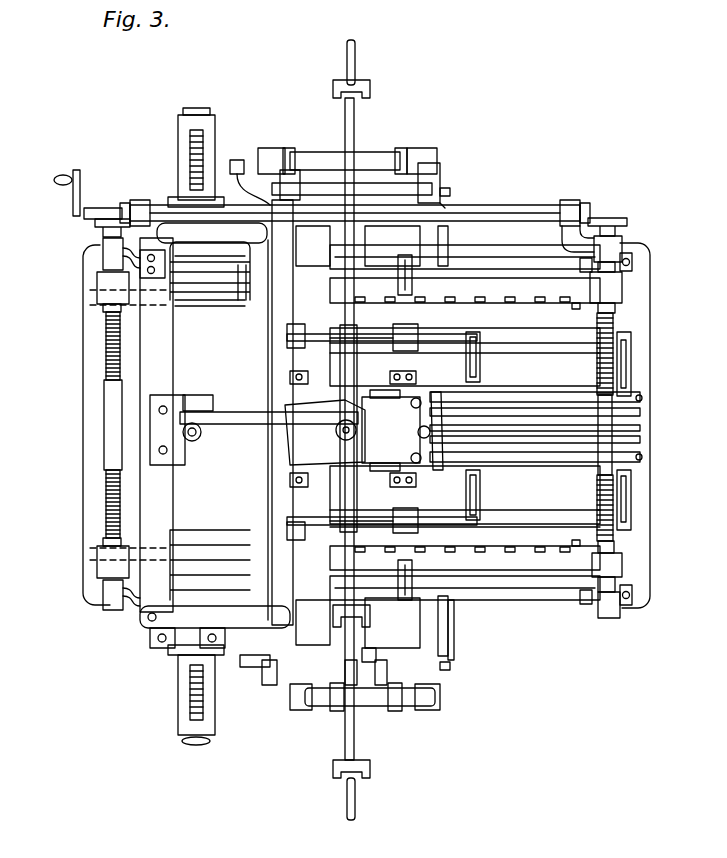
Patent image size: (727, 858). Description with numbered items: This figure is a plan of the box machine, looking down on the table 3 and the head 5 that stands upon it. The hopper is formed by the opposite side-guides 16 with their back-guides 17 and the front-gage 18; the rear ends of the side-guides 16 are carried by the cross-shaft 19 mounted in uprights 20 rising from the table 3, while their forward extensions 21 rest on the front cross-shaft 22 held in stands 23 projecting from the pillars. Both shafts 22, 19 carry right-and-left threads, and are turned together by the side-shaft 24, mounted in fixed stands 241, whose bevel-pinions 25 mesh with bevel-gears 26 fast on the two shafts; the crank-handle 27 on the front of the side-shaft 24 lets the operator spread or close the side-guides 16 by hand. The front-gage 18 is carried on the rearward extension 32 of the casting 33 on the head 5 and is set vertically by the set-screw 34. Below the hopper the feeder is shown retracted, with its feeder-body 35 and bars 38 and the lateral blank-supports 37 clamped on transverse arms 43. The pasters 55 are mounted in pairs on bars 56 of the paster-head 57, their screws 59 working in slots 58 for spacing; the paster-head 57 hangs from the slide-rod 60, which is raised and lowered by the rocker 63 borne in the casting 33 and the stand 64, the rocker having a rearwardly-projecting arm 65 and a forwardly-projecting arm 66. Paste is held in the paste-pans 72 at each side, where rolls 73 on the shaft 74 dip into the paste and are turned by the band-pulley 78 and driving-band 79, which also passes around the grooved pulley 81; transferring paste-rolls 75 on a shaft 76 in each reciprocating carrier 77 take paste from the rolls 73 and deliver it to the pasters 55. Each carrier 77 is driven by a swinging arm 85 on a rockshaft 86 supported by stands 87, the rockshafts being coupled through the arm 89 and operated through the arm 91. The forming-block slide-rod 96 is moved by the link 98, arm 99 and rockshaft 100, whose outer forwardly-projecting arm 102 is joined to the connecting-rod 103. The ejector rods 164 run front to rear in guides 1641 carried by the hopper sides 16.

The table 3 is at (83, 440).
The head 5 is at (179, 425).
The side-guides 16 is at (500, 303).
The back-guides 17 is at (574, 305).
The front-gage 18 is at (440, 396).
The cross-shaft 19 is at (618, 448).
The uprights 20 is at (622, 242).
The forward extensions 21 is at (100, 292).
The cross-shaft 22 is at (105, 411).
The stands 23 is at (103, 242).
The side-shaft 24 is at (520, 208).
The bevel-pinions 25 is at (127, 205).
The bevel-gears 26 is at (110, 218).
The crank-handle 27 is at (74, 172).
The rearward extension 32 is at (391, 430).
The casting 33 is at (226, 452).
The set-screw 34 is at (420, 428).
The feeder-body 35 is at (503, 430).
The lateral blank-supports 37 is at (498, 332).
The bars 38 is at (565, 390).
The arms 43 is at (632, 366).
The pasters 55 is at (296, 326).
The bars 56 is at (326, 348).
The paster-head 57 is at (352, 490).
The slots 58 is at (377, 332).
The screws 59 is at (409, 342).
The slide-rod 60 is at (351, 428).
The rocker 63 is at (283, 540).
The stand 64 is at (215, 627).
The rearwardly-projecting arm 65 is at (259, 430).
The forwardly-projecting arm 66 is at (255, 664).
The paste-pans 72 is at (388, 183).
The rolls 73 is at (318, 205).
The shaft 74 is at (449, 233).
The transferring paste-rolls 75 is at (405, 242).
The shaft 76 is at (326, 246).
The carrier 77 is at (357, 130).
The band-pulley 78 is at (447, 208).
The driving-band 79 is at (447, 203).
The grooved pulley 81 is at (474, 258).
The swinging arm 85 is at (357, 52).
The rockshaft 86 is at (372, 158).
The stands 87 is at (262, 152).
The arm 89 is at (290, 152).
The arm 91 is at (373, 700).
The slide-rod 96 is at (191, 440).
The link 98 is at (186, 400).
The arm 99 is at (220, 410).
The rockshaft 100 is at (283, 361).
The forwardly-projecting arm 102 is at (233, 170).
The connecting-rod 103 is at (245, 158).
The rods 164 is at (222, 262).
The fixed stands 241 is at (150, 199).
The guides 1641 is at (582, 264).